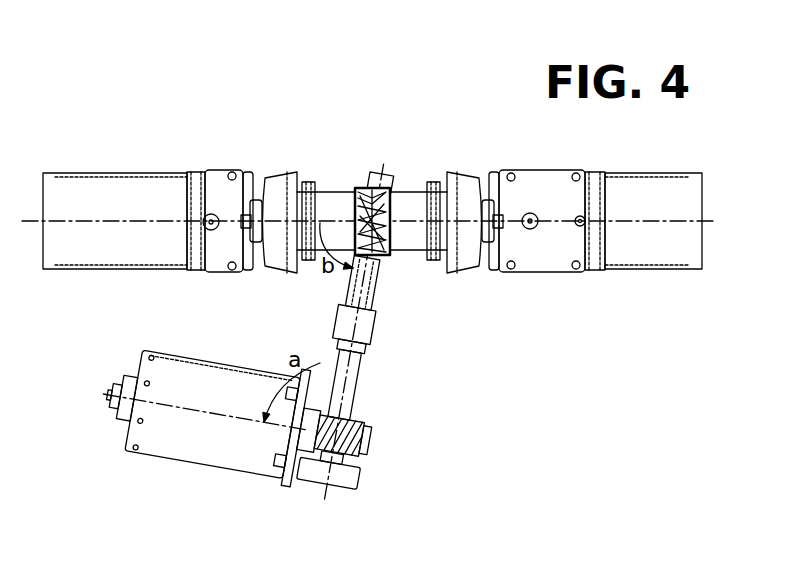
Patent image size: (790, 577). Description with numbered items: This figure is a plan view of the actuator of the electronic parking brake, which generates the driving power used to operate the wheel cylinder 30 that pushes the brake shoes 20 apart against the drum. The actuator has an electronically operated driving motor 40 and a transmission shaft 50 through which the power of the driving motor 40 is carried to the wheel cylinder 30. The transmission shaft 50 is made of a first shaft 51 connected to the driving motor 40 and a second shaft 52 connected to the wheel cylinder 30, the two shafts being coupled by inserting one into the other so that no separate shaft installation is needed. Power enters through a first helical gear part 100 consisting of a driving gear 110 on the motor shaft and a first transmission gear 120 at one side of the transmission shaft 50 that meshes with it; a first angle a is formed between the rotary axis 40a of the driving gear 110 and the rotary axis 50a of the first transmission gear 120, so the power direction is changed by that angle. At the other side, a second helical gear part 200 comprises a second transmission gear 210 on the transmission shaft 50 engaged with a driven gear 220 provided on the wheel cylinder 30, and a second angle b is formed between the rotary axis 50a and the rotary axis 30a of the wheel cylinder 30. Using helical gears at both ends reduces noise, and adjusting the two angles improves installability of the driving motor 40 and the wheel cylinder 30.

The brake shoes 20 is at (537, 262).
The wheel cylinder 30 is at (328, 204).
The rotary axis of the wheel cylinder 30a is at (112, 222).
The second helical gear part 200 is at (393, 146).
The second transmission gear 210 is at (355, 190).
The driven gear 220 is at (355, 203).
The transmission shaft 50 is at (432, 345).
The first shaft 51 is at (346, 365).
The second shaft 52 is at (373, 283).
The rotary axis of the transmission gears 50a is at (360, 398).
The first helical gear part 100 is at (428, 475).
The driving gear 110 is at (360, 460).
The first transmission gear 120 is at (377, 437).
The driving motor 40 is at (196, 456).
The rotary axis of the driving gear 40a is at (173, 408).